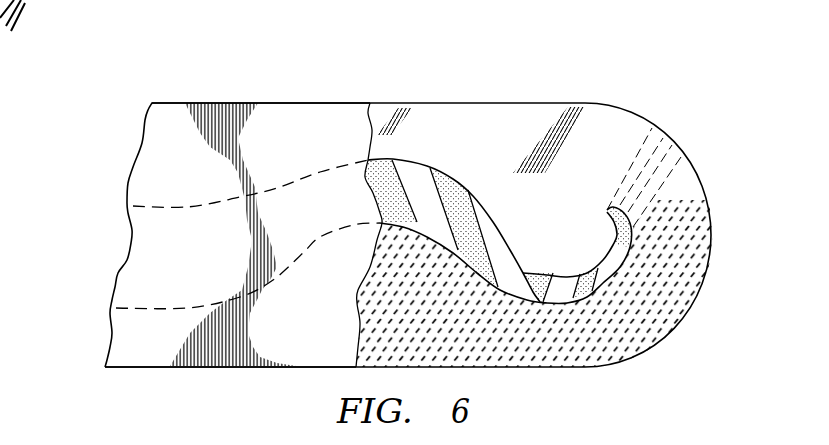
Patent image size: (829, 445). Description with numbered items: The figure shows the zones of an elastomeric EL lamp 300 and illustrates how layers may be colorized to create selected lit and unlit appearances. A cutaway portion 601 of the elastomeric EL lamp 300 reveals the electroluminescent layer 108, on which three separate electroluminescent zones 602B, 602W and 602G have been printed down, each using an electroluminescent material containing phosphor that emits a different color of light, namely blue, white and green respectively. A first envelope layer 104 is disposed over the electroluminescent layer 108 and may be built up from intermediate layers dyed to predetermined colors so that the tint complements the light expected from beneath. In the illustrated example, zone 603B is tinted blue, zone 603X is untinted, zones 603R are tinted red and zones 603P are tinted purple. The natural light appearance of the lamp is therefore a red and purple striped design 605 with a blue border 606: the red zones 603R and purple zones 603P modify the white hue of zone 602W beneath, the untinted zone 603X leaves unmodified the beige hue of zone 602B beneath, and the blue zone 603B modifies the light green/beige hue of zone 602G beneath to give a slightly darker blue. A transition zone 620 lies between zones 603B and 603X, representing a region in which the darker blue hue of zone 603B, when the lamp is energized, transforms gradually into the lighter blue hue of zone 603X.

The elastomeric EL lamp 300 is at (550, 66).
The cutaway portion 601 is at (203, 96).
The electroluminescent zone (blue) 602B is at (167, 151).
The electroluminescent zone (white) 602W is at (143, 261).
The electroluminescent zone (green) 602G is at (248, 332).
The electroluminescent layer 108 is at (163, 350).
The first envelope layer 104 is at (435, 344).
The purple-tinted zones 603P is at (410, 172).
The red-tinted zones 603R is at (593, 277).
The untinted zone 603X is at (603, 130).
The red and purple striped design 605 is at (607, 210).
The transition zone 620 is at (672, 147).
The blue border 606 is at (675, 320).
The blue-tinted zone 603B is at (596, 338).